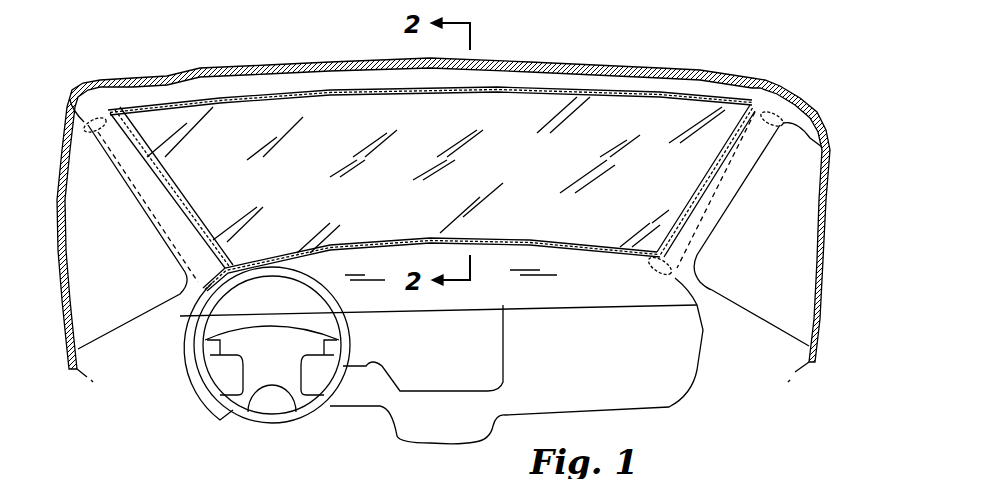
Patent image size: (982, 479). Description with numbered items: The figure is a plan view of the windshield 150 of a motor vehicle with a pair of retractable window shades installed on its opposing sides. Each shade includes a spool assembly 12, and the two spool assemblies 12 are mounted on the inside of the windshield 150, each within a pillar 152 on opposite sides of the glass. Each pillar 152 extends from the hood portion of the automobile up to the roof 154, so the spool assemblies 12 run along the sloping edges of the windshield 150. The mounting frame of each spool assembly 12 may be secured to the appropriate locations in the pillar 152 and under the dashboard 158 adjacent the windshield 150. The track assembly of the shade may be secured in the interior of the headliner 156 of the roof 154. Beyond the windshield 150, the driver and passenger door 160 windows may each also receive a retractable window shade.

The spool assembly 12 is at (95, 122).
The windshield 150 is at (532, 166).
The pillar 152 is at (116, 190).
The roof 154 is at (598, 67).
The headliner 156 is at (522, 90).
The dashboard 158 is at (620, 295).
The door 160 is at (781, 360).